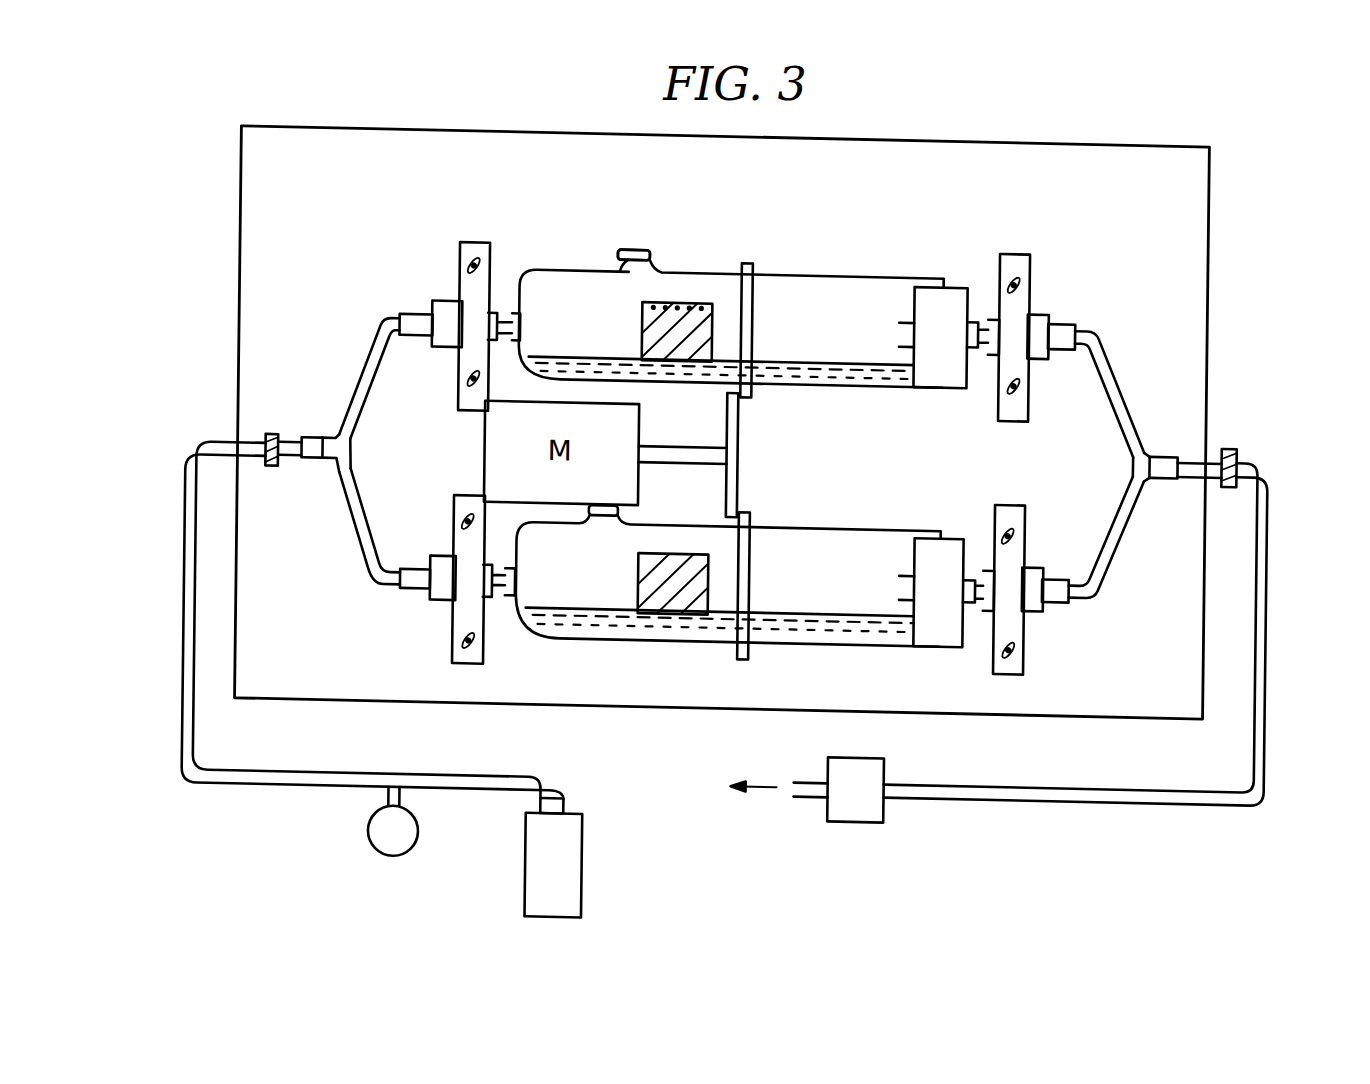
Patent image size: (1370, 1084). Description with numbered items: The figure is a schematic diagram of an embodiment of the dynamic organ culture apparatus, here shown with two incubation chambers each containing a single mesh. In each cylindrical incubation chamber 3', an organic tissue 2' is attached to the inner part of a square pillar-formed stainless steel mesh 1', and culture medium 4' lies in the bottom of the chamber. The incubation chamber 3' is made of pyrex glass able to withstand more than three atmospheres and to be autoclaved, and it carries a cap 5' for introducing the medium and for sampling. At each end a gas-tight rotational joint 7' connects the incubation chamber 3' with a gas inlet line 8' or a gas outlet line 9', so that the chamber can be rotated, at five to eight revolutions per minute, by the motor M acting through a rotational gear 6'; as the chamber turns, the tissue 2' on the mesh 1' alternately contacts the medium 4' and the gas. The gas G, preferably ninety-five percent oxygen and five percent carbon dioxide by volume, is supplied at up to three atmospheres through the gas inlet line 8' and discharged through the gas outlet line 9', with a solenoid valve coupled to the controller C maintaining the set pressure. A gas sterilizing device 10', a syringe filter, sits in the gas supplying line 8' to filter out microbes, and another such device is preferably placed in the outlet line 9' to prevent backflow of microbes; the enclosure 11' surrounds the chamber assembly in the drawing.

The mesh 1' is at (697, 305).
The organic tissue 2' is at (699, 254).
The incubation chamber 3' is at (743, 290).
The culture medium 4' is at (720, 414).
The cap 5' is at (645, 220).
The rotational gear 6' is at (785, 462).
The gas-tight rotational joint 7' is at (736, 445).
The gas inlet line 8' is at (361, 678).
The gas outlet line 9' is at (1040, 642).
The gas sterilizing device 10' is at (789, 482).
The housing 11' is at (782, 424).